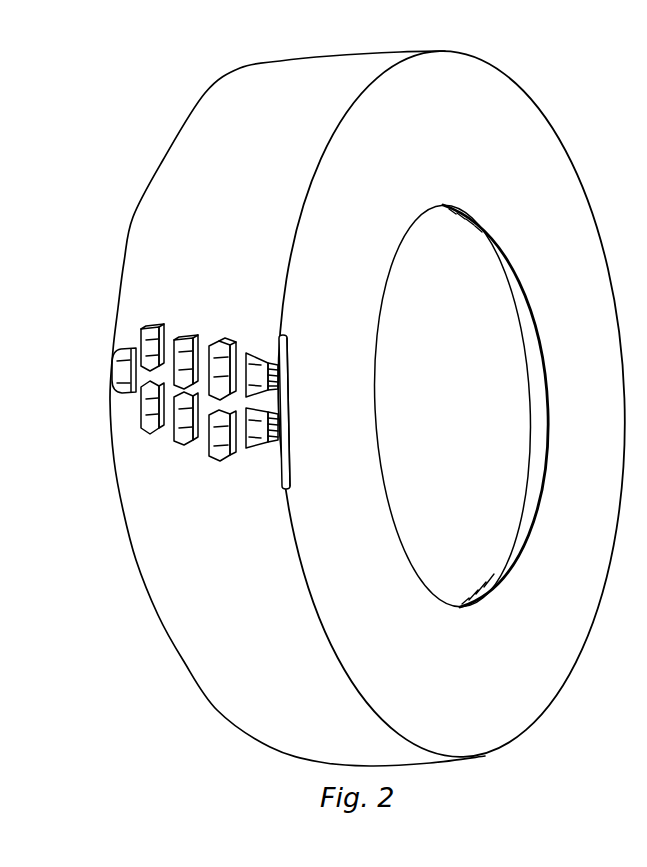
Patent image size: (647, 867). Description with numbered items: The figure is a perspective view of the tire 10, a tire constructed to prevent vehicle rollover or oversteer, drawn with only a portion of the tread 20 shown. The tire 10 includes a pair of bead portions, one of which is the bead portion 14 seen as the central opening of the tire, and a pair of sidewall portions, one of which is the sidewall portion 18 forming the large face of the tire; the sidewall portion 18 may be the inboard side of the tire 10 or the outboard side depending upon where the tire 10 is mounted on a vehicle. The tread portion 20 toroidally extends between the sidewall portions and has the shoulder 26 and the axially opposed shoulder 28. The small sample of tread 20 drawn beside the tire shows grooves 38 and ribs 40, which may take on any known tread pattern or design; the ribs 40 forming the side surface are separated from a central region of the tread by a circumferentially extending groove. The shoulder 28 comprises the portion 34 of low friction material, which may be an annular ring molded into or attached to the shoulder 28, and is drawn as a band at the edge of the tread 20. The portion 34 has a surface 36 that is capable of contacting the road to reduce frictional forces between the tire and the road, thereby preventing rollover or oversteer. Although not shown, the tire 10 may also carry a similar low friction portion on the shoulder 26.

The tire 10 is at (518, 63).
The bead portion 14 is at (424, 572).
The sidewall portion 18 is at (557, 213).
The tread portion 20 is at (198, 368).
The shoulder 26 is at (106, 362).
The shoulder 28 is at (268, 343).
The portion of low friction material 34 is at (289, 356).
The surface 36 is at (292, 432).
The grooves 38 is at (167, 434).
The ribs 40 is at (151, 327).